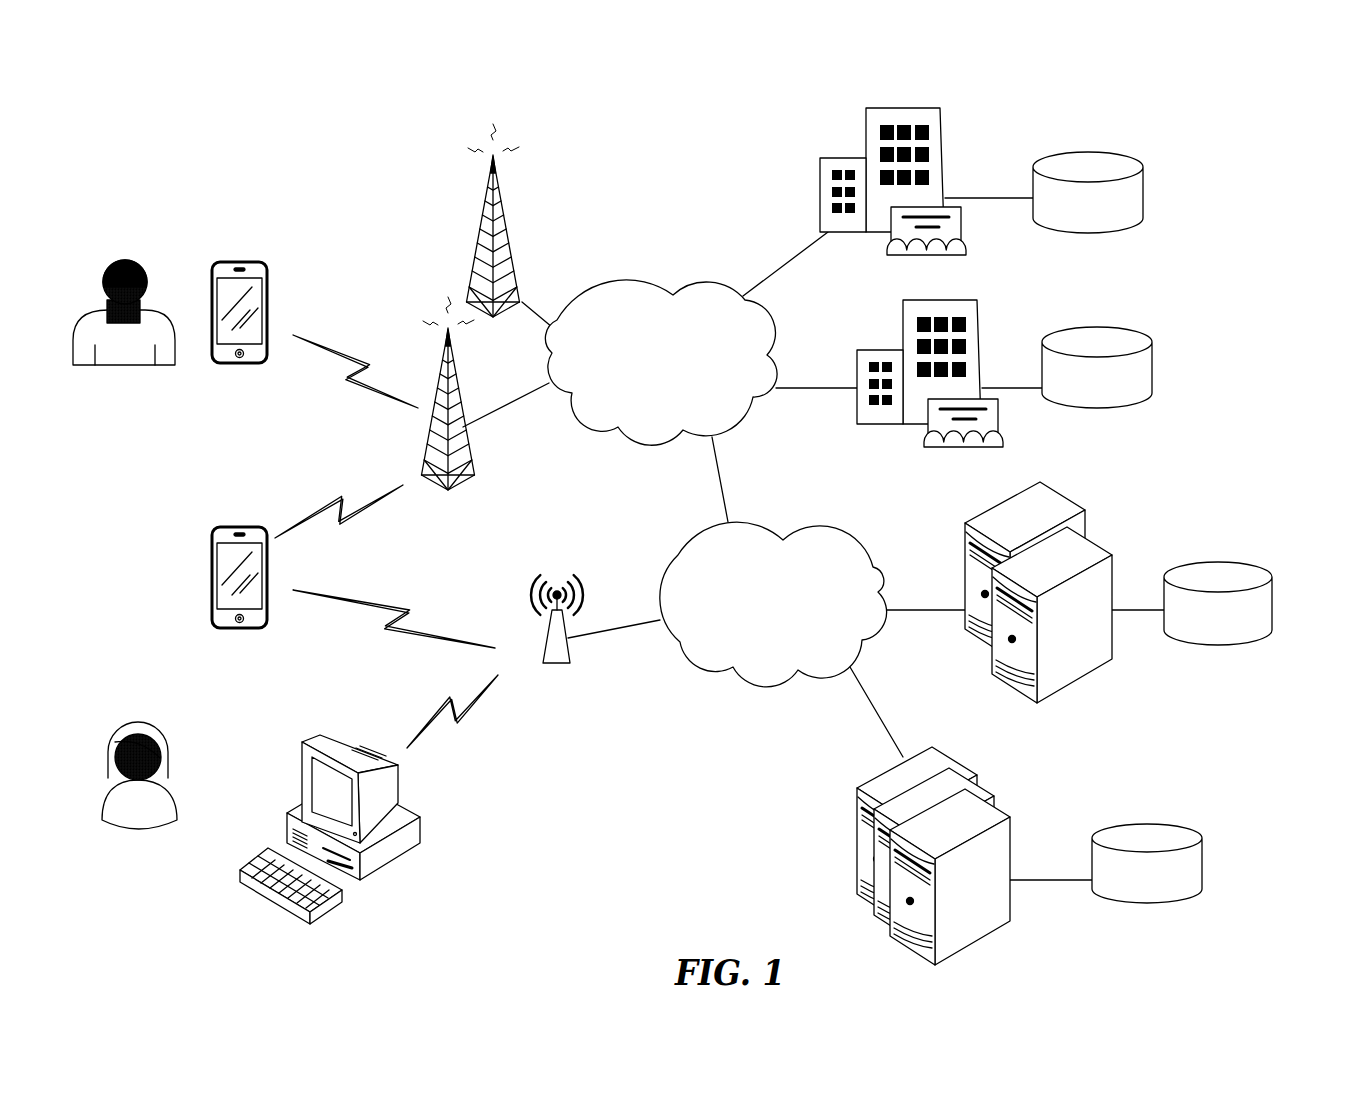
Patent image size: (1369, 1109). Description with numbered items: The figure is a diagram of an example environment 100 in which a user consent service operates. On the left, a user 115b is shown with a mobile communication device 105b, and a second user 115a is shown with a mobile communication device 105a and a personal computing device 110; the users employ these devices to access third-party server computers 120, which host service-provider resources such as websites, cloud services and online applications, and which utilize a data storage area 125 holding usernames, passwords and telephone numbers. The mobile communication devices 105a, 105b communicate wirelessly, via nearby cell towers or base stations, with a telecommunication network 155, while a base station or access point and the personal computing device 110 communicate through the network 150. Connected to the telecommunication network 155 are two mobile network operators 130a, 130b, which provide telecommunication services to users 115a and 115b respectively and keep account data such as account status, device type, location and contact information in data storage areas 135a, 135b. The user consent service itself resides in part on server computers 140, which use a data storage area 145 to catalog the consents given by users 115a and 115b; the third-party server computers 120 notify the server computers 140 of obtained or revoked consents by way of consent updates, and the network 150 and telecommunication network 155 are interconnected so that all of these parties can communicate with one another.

The environment 100 is at (235, 166).
The mobile communication device 105a is at (237, 527).
The mobile communication device 105b is at (238, 263).
The personal computing device 110 is at (425, 822).
The user 115a is at (125, 721).
The user 115b is at (120, 259).
The third-party server computers 120 is at (980, 783).
The data storage area 125 is at (1178, 825).
The mobile network operator 130a is at (943, 120).
The mobile network operator 130b is at (983, 318).
The data storage area 135a is at (1113, 153).
The data storage area 135b is at (1123, 324).
The server computers 140 is at (1053, 490).
The data storage area 145 is at (1272, 615).
The network 150 is at (780, 688).
The telecommunication network 155 is at (608, 290).